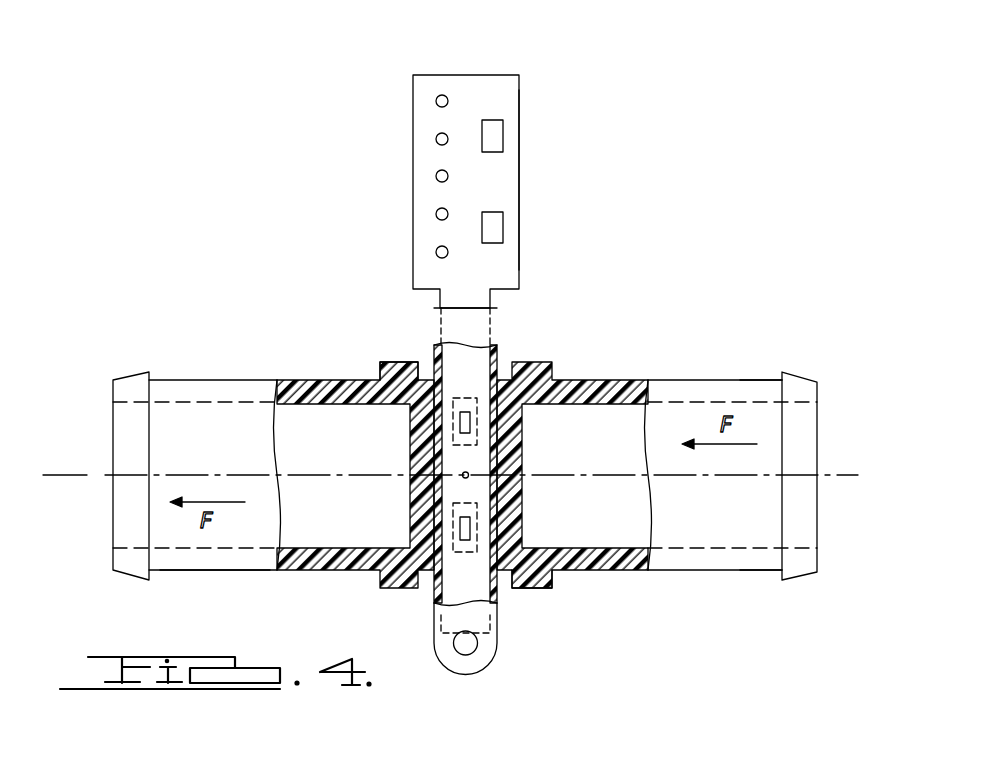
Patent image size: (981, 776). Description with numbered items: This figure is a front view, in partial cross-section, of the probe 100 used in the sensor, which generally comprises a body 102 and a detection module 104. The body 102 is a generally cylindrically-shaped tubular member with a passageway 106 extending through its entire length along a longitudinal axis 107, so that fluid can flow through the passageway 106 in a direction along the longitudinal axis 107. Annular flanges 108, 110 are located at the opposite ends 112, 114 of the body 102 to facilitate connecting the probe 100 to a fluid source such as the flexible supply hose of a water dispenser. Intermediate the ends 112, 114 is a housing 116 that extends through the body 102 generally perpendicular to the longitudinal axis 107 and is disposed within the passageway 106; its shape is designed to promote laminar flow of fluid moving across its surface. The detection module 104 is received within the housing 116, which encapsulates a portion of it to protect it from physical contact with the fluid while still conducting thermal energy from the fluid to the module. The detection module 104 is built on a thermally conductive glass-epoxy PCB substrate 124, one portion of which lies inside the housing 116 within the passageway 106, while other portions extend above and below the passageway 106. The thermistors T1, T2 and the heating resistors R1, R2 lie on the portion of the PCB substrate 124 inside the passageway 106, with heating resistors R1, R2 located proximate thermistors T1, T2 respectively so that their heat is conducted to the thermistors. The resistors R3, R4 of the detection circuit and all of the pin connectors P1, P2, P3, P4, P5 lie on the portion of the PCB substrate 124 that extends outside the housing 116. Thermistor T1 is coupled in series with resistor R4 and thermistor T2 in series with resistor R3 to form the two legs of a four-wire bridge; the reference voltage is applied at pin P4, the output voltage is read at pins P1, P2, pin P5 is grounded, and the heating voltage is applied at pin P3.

The probe 100 is at (208, 158).
The body 102 is at (663, 388).
The detection module 104 is at (502, 100).
The passageway 106 is at (160, 550).
The longitudinal axis 107 is at (87, 473).
The annular flange 108 is at (130, 497).
The annular flange 110 is at (400, 366).
The end 112 is at (748, 388).
The end 114 is at (213, 560).
The housing 116 is at (503, 453).
The PCB substrate 124 is at (503, 189).
The pin connector P1 is at (436, 252).
The pin connector P2 is at (436, 214).
The pin connector P3 is at (436, 176).
The pin connector P4 is at (436, 139).
The pin connector P5 is at (436, 101).
The heating resistor R1 is at (453, 421).
The heating resistor R2 is at (453, 521).
The resistor R3 is at (498, 232).
The resistor R4 is at (498, 137).
The thermistor T1 is at (470, 420).
The thermistor T2 is at (470, 523).